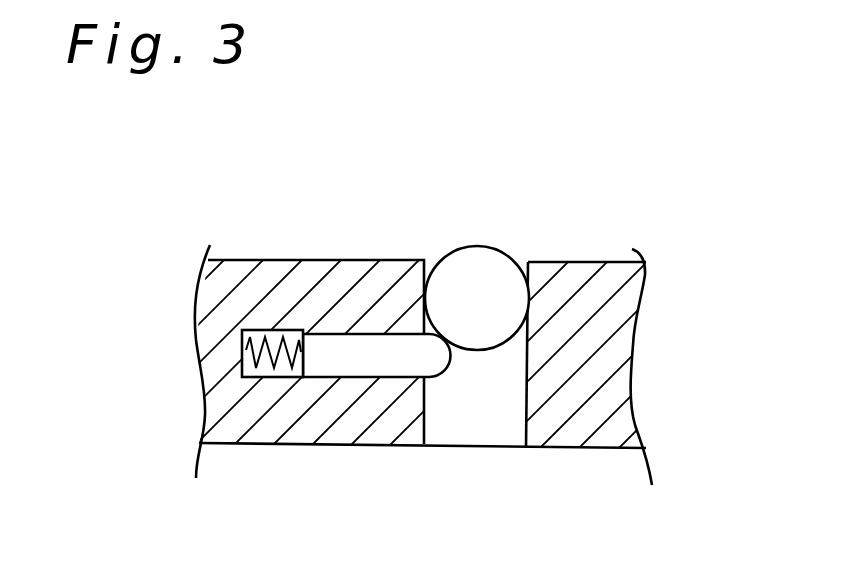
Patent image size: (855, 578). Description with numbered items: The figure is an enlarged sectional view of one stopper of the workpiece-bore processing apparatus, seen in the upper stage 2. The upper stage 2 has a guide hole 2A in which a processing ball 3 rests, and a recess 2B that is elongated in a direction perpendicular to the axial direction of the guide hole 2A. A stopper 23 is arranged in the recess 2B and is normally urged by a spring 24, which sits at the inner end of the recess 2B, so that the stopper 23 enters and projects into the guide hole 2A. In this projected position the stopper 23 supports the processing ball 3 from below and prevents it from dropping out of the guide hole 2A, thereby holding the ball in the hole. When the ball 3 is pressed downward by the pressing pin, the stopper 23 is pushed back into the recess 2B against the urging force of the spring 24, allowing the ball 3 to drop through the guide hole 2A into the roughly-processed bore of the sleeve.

The upper stage 2 is at (425, 342).
The guide hole 2A is at (493, 422).
The recess 2B is at (255, 380).
The processing ball 3 is at (483, 268).
The stopper 23 is at (378, 355).
The spring 24 is at (242, 350).